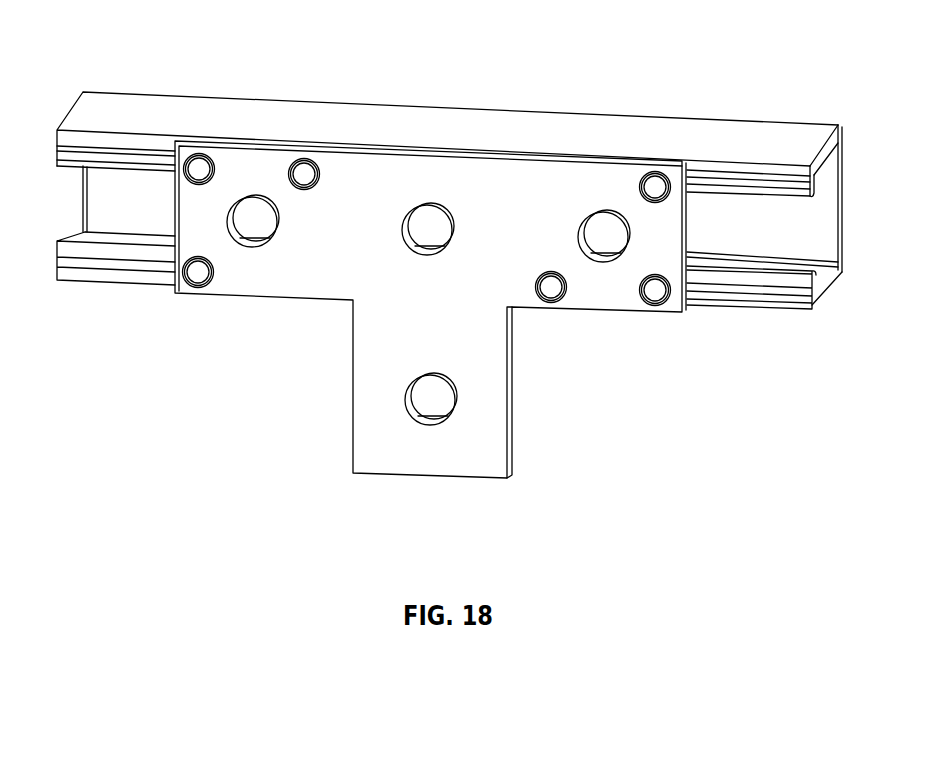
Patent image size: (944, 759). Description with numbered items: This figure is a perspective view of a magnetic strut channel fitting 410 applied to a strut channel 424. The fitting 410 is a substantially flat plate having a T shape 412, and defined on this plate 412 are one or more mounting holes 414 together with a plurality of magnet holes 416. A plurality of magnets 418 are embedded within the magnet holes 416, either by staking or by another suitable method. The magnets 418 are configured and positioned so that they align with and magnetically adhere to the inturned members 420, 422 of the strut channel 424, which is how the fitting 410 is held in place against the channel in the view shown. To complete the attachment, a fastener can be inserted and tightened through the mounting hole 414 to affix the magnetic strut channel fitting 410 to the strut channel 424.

The magnetic strut channel fitting 410 is at (422, 265).
The T shape plate 412 is at (533, 185).
The mounting hole 414 is at (410, 412).
The magnet hole 416 is at (310, 160).
The magnet 418 is at (297, 175).
The inturned member 420 is at (777, 183).
The inturned member 422 is at (763, 295).
The strut channel 424 is at (449, 214).